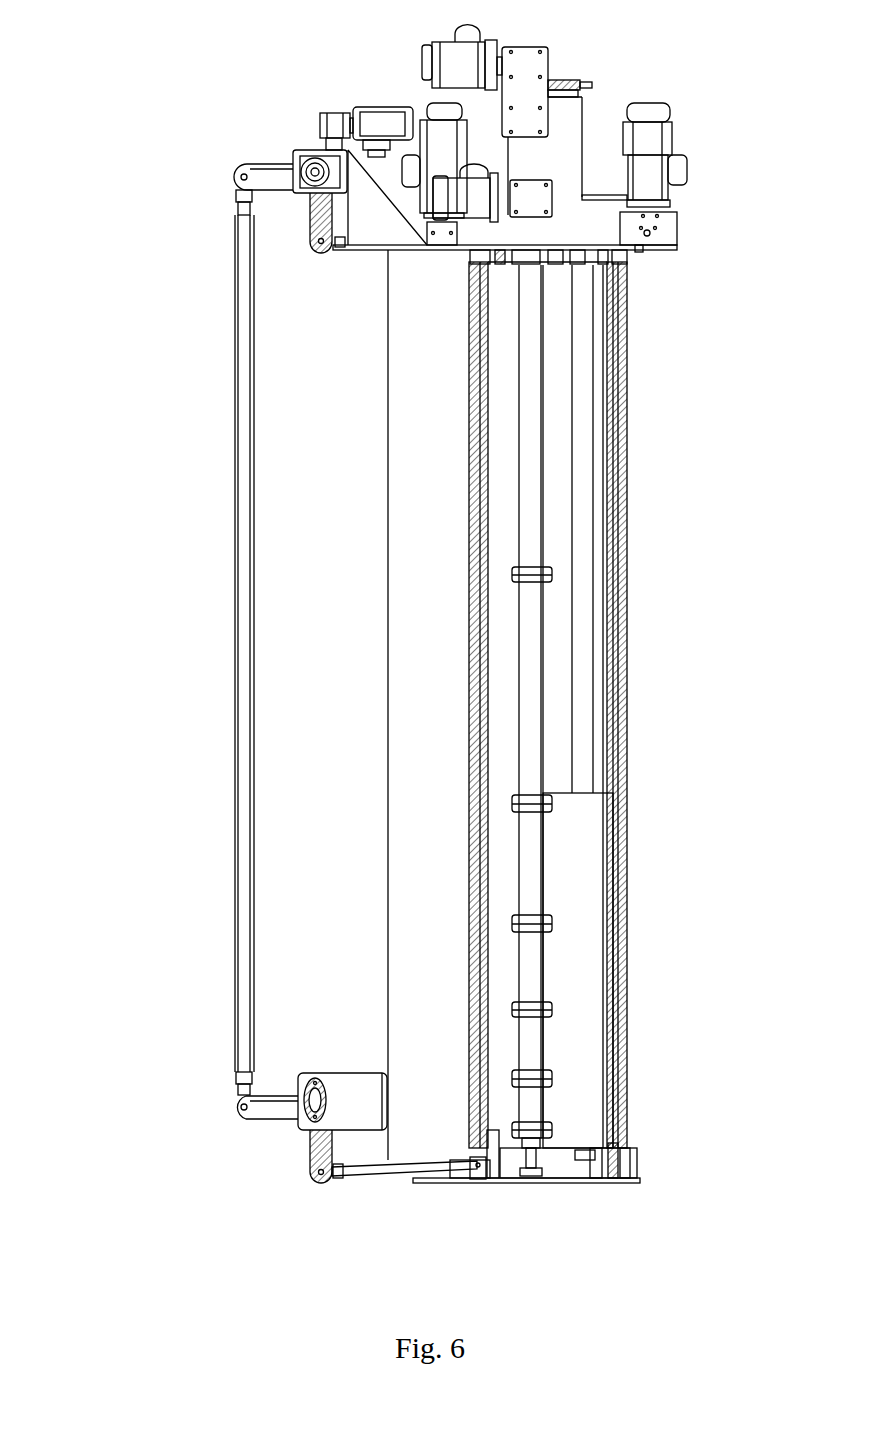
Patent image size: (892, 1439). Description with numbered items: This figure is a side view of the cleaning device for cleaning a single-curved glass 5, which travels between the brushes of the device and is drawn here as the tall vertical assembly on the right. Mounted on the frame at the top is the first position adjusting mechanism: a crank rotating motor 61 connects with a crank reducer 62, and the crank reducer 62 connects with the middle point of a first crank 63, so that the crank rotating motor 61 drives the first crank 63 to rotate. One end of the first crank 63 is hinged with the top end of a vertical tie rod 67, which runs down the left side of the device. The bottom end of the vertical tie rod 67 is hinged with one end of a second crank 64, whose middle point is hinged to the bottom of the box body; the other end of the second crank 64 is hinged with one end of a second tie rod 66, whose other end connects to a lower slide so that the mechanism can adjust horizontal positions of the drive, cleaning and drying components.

The single-curved glass 5 is at (585, 857).
The crank rotating motor 61 is at (383, 120).
The crank reducer 62 is at (323, 117).
The first crank 63 is at (277, 177).
The second crank 64 is at (277, 1106).
The second tie rod 66 is at (407, 1168).
The vertical tie rod 67 is at (243, 530).